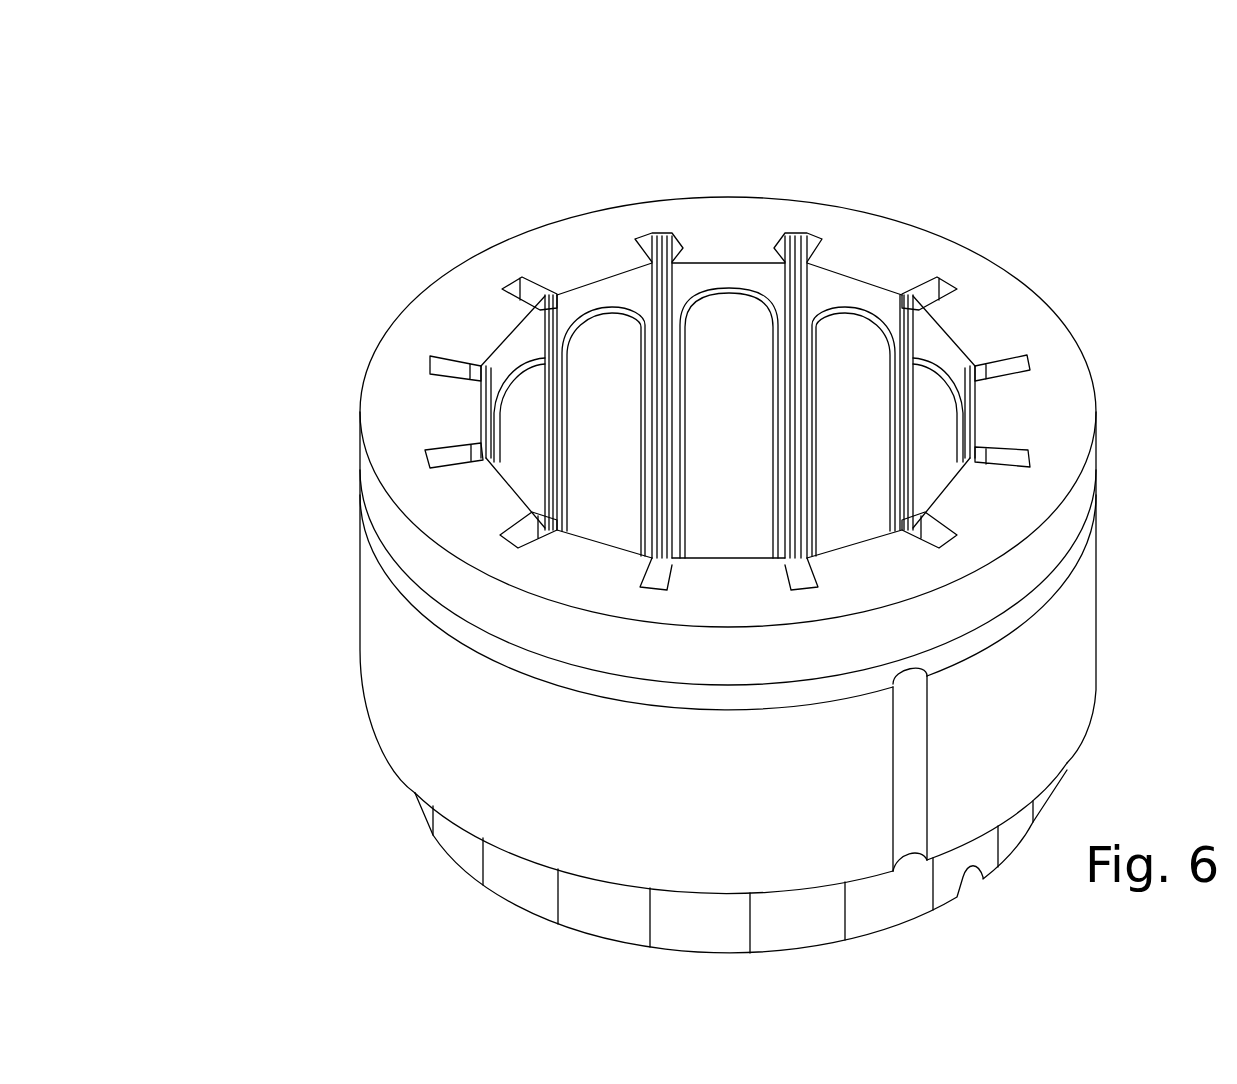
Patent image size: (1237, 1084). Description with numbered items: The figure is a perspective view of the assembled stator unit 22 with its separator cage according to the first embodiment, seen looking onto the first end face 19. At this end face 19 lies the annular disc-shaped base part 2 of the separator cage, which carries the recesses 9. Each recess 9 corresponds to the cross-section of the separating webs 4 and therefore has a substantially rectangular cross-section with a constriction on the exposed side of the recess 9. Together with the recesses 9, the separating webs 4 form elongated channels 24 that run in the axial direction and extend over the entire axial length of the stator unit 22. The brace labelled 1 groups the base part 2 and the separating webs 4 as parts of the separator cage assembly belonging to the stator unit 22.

The stator 1 is at (542, 132).
The annular disc-shaped base part 2 is at (488, 323).
The separating webs 4 is at (647, 425).
The recesses 9 is at (1030, 366).
The first end face 19 is at (1027, 493).
The stator unit 22 is at (284, 308).
The elongated channels 24 is at (792, 367).